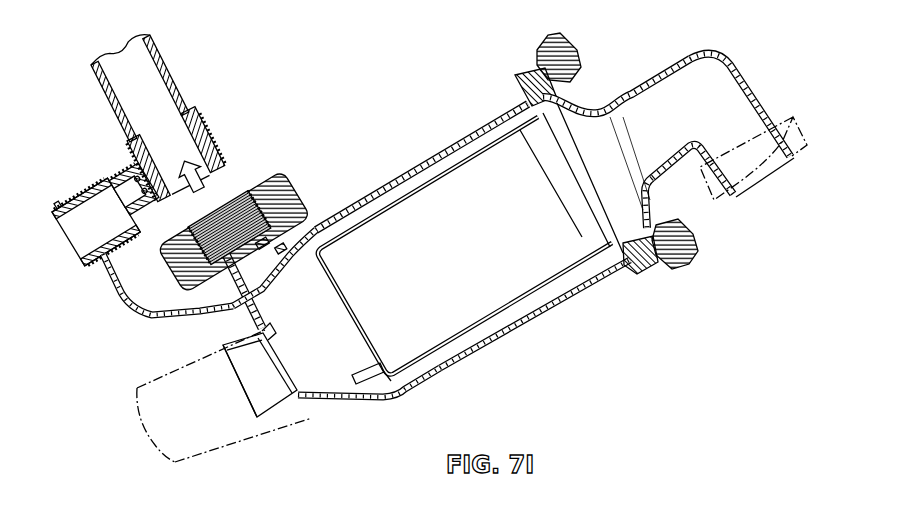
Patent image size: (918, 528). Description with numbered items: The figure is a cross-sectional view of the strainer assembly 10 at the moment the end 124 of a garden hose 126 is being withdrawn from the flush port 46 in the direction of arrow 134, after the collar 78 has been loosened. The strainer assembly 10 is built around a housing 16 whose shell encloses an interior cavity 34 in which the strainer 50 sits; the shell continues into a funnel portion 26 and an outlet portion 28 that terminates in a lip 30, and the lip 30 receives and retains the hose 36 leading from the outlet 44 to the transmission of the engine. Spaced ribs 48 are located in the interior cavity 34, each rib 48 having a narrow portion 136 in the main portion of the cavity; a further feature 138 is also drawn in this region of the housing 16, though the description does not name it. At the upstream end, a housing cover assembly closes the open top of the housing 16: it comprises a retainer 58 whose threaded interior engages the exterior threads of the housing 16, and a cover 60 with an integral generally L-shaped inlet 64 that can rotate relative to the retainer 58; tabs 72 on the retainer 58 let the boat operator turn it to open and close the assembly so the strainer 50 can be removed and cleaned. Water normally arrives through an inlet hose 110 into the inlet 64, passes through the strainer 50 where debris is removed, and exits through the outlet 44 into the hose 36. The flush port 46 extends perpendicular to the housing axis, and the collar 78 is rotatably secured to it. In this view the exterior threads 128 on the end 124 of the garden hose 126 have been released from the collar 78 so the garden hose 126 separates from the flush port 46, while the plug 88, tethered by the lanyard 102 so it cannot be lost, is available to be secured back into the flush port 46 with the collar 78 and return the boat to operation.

The strainer assembly 10 is at (357, 105).
The housing 16 is at (440, 146).
The funnel portion 26 is at (337, 399).
The outlet portion 28 is at (290, 401).
The lip 30 is at (266, 414).
The interior cavity 34 is at (320, 331).
The hose 36 is at (143, 374).
The outlet 44 is at (247, 402).
The flush port 46 is at (240, 294).
The ribs 48 is at (392, 386).
The strainer 50 is at (497, 133).
The retainer 58 is at (520, 74).
The cover 60 is at (601, 105).
The inlet 64 is at (767, 100).
The tabs 72 is at (555, 42).
The collar 78 is at (301, 199).
The plug 88 is at (105, 172).
The lanyard 102 is at (126, 300).
The inlet hose 110 is at (721, 200).
The end of garden hose 124 is at (205, 118).
The garden hose 126 is at (175, 76).
The exterior threads 128 is at (222, 144).
The arrow 134 is at (250, 218).
The narrow portion 136 is at (503, 318).
The flange 138 is at (373, 384).